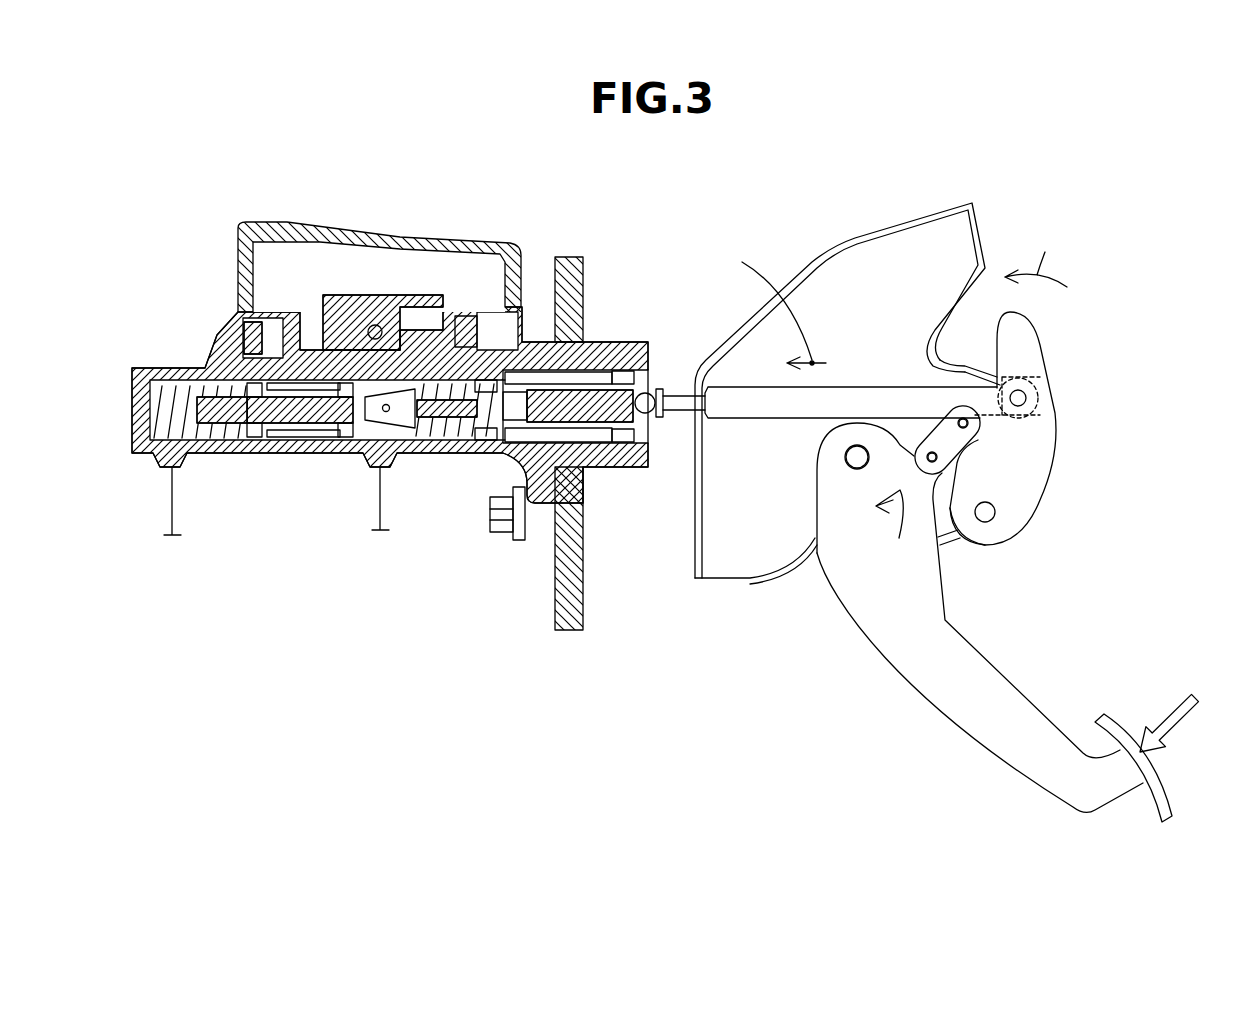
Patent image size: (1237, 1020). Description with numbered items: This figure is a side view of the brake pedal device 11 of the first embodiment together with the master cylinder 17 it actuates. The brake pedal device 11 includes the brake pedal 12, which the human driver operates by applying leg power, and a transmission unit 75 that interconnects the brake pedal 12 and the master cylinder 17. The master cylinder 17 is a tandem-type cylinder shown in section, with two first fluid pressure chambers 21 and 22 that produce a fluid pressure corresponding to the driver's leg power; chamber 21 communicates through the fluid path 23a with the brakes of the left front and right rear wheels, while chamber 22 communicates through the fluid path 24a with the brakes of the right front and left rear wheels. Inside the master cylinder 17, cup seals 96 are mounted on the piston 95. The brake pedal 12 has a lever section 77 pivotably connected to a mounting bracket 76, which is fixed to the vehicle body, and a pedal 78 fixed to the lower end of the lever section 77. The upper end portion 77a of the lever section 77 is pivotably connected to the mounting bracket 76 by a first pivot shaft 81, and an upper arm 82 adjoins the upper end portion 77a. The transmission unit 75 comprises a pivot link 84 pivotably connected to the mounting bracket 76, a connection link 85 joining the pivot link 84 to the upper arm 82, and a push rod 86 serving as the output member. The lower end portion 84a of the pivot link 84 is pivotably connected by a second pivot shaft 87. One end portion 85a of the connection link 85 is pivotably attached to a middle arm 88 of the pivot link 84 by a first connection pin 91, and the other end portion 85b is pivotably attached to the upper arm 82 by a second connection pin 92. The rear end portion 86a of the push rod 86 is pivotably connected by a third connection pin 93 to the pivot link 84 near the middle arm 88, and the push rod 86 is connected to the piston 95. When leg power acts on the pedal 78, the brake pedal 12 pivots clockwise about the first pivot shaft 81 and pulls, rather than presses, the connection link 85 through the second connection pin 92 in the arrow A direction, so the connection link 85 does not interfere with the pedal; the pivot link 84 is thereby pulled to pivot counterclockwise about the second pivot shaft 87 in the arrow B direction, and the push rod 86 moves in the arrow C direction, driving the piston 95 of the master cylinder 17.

The brake pedal device 11 is at (1013, 162).
The brake pedal 12 is at (982, 622).
The master cylinder 17 is at (260, 193).
The first fluid pressure chamber 21 is at (448, 430).
The first fluid pressure chamber 22 is at (228, 430).
The fluid path 23a is at (380, 488).
The fluid path 24a is at (172, 488).
The transmission unit 75 is at (1079, 432).
The mounting bracket 76 is at (820, 246).
The lever section 77 is at (880, 625).
The upper end portion 77a is at (820, 457).
The pedal 78 is at (1160, 800).
The first pivot shaft 81 is at (853, 463).
The upper arm 82 is at (931, 485).
The pivot link 84 is at (1073, 459).
The lower end portion 84a is at (992, 540).
The connection link 85 is at (974, 428).
The one end portion 85a is at (978, 425).
The another end portion 85b is at (927, 445).
The push rod 86 is at (896, 351).
The rear end portion 86a is at (1017, 378).
The second pivot shaft 87 is at (990, 513).
The middle arm 88 is at (958, 393).
The first connection pin 91 is at (983, 430).
The second connection pin 92 is at (932, 452).
The third connection pin 93 is at (1022, 398).
The piston 95 is at (333, 377).
The cup seals 96 is at (235, 365).